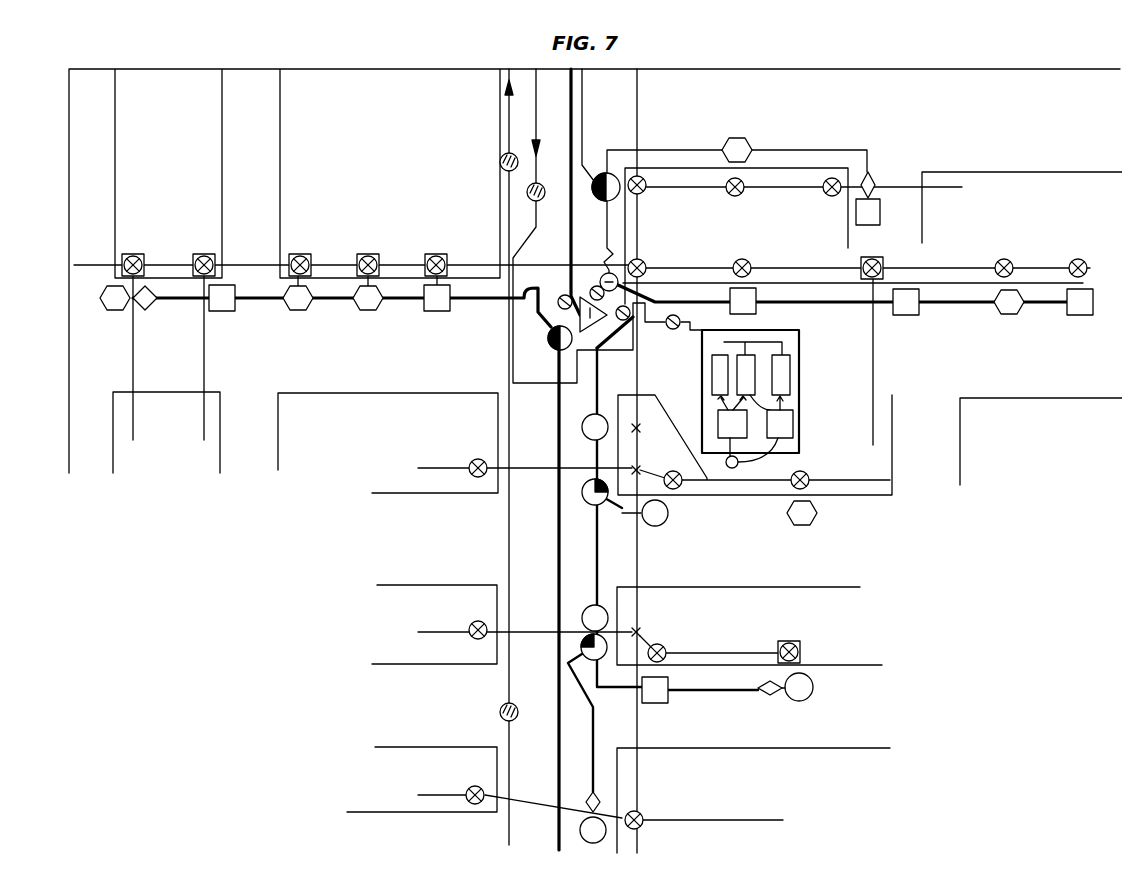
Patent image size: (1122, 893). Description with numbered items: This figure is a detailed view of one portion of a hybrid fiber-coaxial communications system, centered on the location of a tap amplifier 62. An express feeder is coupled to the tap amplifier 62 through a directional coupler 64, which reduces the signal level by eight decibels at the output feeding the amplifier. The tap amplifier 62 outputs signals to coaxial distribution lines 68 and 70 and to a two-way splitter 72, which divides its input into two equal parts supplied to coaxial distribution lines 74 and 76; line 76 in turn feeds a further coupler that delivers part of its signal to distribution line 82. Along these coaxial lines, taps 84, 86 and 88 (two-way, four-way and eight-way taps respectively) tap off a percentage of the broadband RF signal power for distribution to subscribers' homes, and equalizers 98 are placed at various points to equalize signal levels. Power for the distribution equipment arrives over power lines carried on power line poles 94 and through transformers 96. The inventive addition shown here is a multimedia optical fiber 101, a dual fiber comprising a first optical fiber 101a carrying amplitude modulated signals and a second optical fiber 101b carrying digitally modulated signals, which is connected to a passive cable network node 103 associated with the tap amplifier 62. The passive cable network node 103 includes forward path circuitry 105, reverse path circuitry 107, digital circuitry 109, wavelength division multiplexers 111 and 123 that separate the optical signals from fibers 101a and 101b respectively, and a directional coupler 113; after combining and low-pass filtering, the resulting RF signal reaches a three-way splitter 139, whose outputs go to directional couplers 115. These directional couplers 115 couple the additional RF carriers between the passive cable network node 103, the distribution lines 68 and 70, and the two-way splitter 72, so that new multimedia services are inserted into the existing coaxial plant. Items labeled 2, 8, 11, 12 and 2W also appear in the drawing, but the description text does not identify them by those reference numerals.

The machine 2 is at (733, 470).
The pump 8 is at (548, 340).
The hydrant 11 is at (818, 513).
The water supply 12 is at (620, 195).
The two-way valve 2W is at (596, 267).
The tap amplifier 62 is at (606, 342).
The directional coupler 64 is at (553, 346).
The coaxial distribution line 68 is at (590, 380).
The coaxial distribution line 70 is at (478, 300).
The two-way splitter 72 is at (638, 258).
The coaxial distribution line 74 is at (795, 282).
The coaxial distribution line 76 is at (606, 243).
The distribution line 82 is at (795, 150).
The tap 84 is at (582, 427).
The tap 86 is at (228, 311).
The tap 88 is at (115, 310).
The power line pole 94 is at (642, 428).
The transformer 96 is at (880, 258).
The equalizer 98 is at (152, 310).
The multimedia optical fiber 101 is at (533, 385).
The first optical fiber 101a is at (718, 458).
The second optical fiber 101b is at (775, 455).
The passive cable network node 103 is at (800, 345).
The forward path circuitry 105 is at (712, 360).
The reverse path circuitry 107 is at (800, 397).
The digital circuitry 109 is at (800, 375).
The wavelength division multiplexer 111 is at (800, 445).
The directional coupler 113 is at (724, 340).
The directional coupler 115 is at (567, 277).
The wavelength division multiplexer 123 is at (800, 422).
The three-way splitter 139 is at (676, 280).